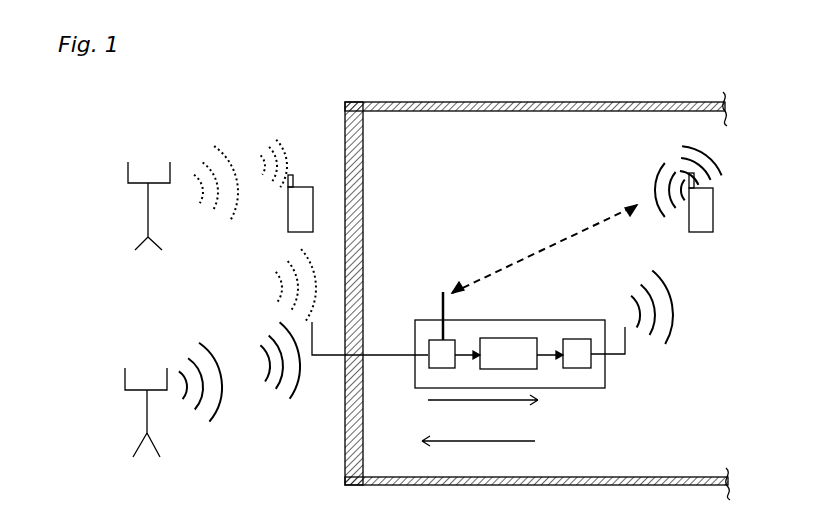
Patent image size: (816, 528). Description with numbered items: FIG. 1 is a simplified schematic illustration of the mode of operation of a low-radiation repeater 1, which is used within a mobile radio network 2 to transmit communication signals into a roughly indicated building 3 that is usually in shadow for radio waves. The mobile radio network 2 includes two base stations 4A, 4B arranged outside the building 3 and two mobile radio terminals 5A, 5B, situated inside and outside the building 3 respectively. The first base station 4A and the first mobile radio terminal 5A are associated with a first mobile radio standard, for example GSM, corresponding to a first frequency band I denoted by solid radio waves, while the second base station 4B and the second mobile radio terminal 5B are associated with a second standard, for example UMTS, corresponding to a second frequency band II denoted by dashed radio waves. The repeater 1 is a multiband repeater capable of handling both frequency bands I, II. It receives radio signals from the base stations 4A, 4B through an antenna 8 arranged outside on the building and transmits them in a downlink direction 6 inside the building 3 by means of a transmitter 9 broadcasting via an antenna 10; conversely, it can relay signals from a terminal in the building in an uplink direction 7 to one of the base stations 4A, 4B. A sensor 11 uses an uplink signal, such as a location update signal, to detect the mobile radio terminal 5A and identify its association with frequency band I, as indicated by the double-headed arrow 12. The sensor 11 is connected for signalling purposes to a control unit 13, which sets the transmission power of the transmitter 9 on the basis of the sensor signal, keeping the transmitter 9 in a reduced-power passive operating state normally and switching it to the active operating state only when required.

The low-radiation repeater 1 is at (626, 394).
The mobile radio network 2 is at (302, 118).
The building 3 is at (585, 102).
The first base station 4A is at (147, 417).
The second base station 4B is at (148, 208).
The first mobile radio terminal 5A is at (715, 208).
The second mobile radio terminal 5B is at (287, 212).
The downlink direction 6 is at (490, 402).
The uplink direction 7 is at (467, 442).
The antenna 8 is at (313, 330).
The transmitter 9 is at (575, 339).
The antenna 10 is at (627, 347).
The sensor 11 is at (430, 340).
The double-headed arrow 12 is at (528, 258).
The control unit 13 is at (512, 338).
The first frequency band I is at (230, 405).
The second frequency band II is at (212, 229).